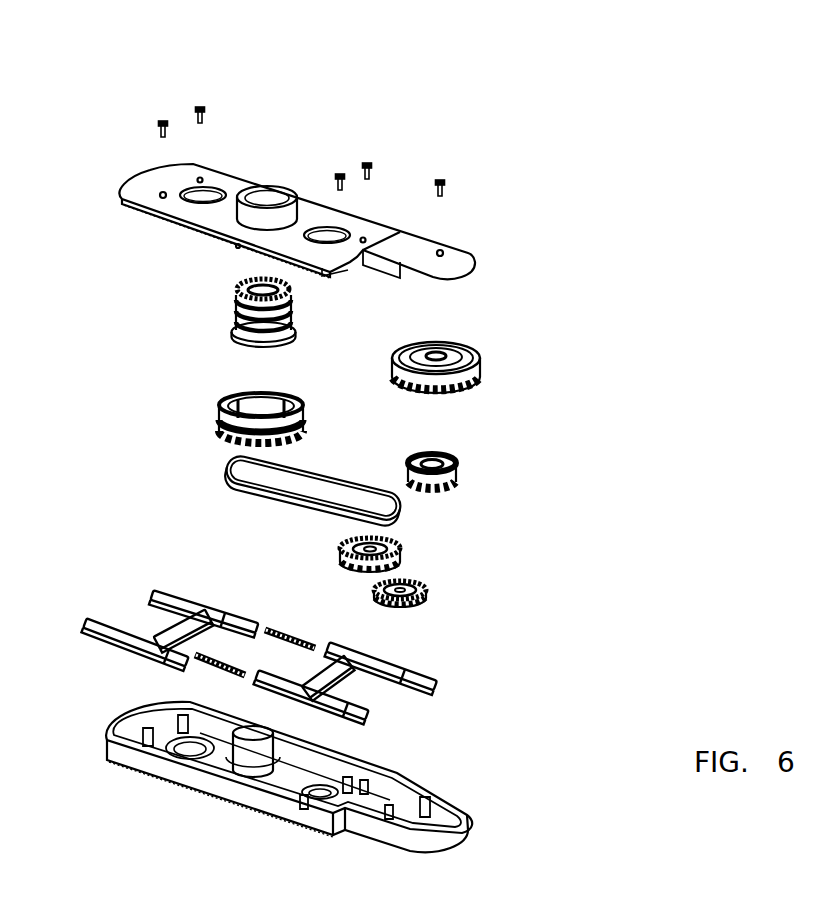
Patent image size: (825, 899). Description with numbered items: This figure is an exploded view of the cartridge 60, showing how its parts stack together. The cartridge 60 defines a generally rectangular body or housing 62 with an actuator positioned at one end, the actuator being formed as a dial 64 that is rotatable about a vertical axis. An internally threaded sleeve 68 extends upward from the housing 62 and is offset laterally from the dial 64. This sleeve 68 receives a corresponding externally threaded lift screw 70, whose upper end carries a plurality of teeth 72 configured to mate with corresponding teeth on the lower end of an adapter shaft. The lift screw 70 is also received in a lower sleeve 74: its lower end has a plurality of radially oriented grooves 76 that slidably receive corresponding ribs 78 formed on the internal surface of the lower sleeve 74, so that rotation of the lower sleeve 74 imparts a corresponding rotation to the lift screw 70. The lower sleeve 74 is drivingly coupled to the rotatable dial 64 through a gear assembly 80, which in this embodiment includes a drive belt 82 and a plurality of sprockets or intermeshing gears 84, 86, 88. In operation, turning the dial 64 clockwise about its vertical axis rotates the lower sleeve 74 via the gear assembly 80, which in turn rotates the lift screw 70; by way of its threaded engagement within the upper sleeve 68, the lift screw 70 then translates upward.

The cartridge 60 is at (562, 105).
The housing 62 is at (197, 782).
The dial 64 is at (472, 362).
The internally threaded sleeve 68 is at (270, 188).
The lift screw 70 is at (247, 311).
The teeth 72 is at (240, 277).
The lower sleeve 74 is at (209, 423).
The grooves 76 is at (248, 342).
The ribs 78 is at (276, 392).
The gear assembly 80 is at (468, 463).
The drive belt 82 is at (253, 488).
The gear 84 is at (347, 560).
The gear 86 is at (417, 606).
The gear 88 is at (434, 492).